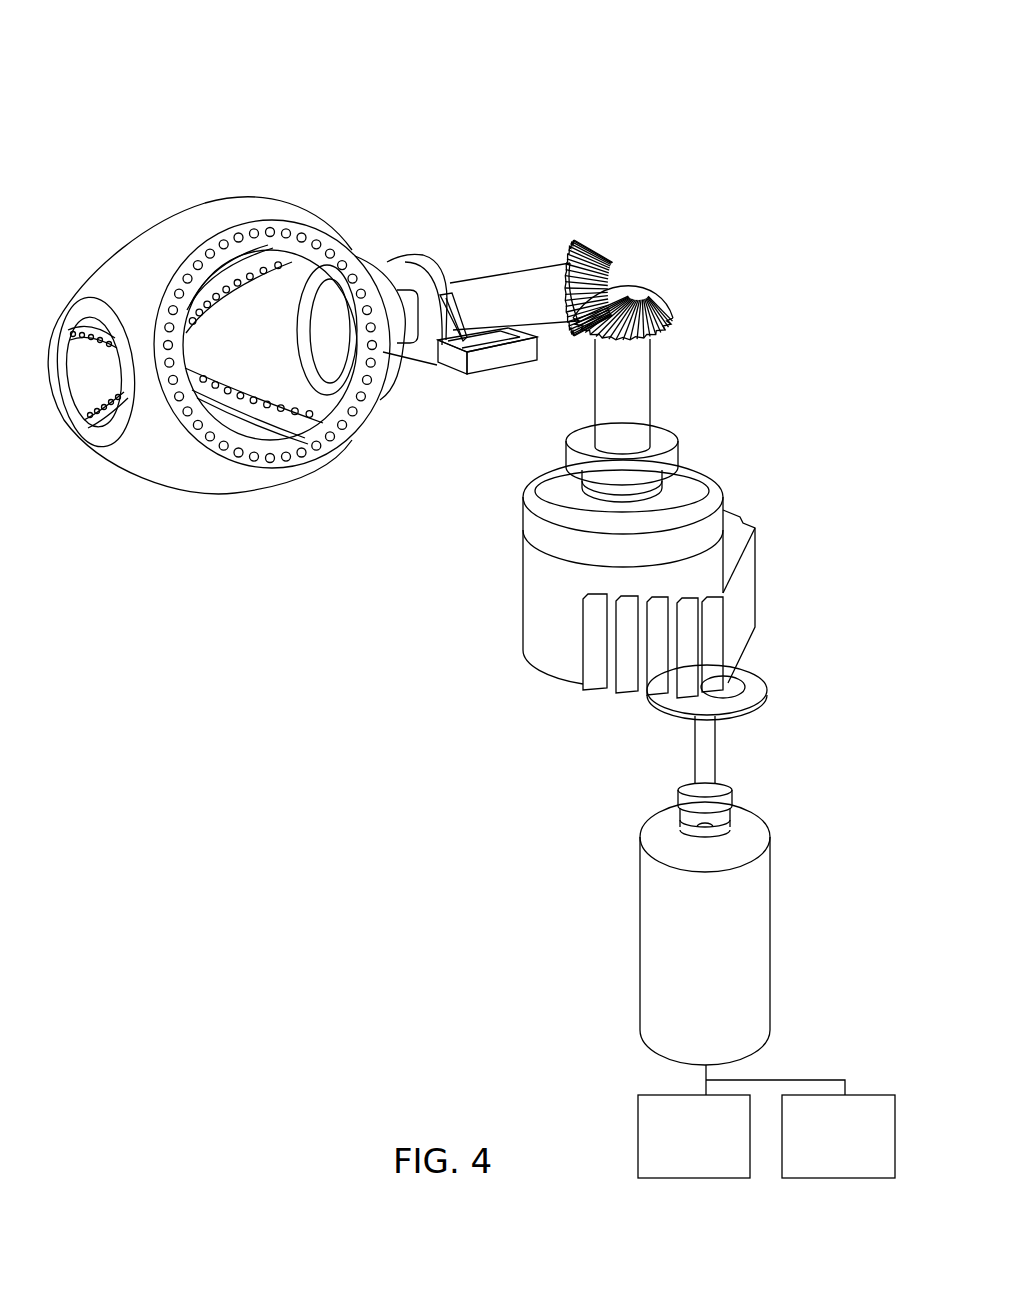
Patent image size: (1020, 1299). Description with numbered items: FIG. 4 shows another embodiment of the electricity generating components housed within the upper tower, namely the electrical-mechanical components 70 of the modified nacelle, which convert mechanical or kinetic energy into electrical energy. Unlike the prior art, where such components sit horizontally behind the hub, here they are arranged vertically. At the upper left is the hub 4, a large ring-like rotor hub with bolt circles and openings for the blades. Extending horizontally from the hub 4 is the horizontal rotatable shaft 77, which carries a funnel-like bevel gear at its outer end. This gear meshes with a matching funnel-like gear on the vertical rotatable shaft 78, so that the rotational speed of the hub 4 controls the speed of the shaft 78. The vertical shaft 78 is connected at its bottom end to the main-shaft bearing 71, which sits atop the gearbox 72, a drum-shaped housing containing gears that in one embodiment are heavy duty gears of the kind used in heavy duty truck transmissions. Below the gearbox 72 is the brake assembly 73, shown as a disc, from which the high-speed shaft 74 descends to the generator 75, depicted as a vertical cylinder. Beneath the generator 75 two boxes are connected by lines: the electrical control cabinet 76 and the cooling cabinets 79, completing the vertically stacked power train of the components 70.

The electrical-mechanical components 70 is at (486, 124).
The hub 4 is at (126, 252).
The horizontal rotatable shaft 77 is at (517, 266).
The vertical rotatable shaft 78 is at (642, 392).
The main-shaft bearing 71 is at (680, 453).
The gearbox 72 is at (758, 570).
The brake assembly 73 is at (767, 677).
The high-speed shaft 74 is at (718, 754).
The generator 75 is at (760, 934).
The electrical control cabinet 76 is at (694, 1121).
The cooling cabinets 79 is at (800, 1129).